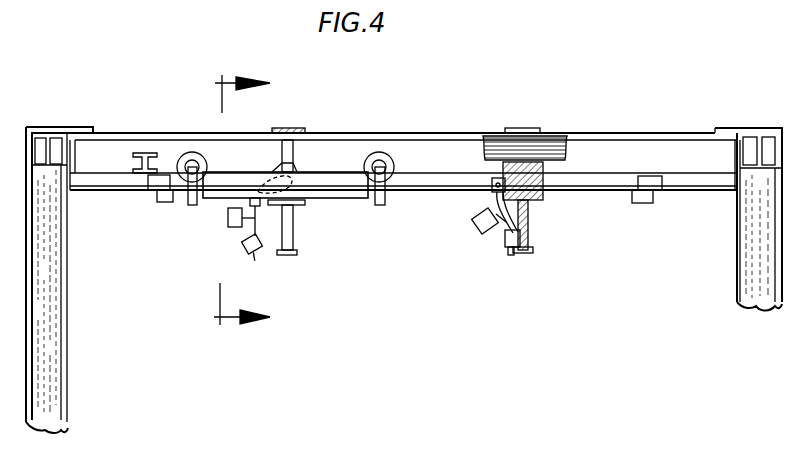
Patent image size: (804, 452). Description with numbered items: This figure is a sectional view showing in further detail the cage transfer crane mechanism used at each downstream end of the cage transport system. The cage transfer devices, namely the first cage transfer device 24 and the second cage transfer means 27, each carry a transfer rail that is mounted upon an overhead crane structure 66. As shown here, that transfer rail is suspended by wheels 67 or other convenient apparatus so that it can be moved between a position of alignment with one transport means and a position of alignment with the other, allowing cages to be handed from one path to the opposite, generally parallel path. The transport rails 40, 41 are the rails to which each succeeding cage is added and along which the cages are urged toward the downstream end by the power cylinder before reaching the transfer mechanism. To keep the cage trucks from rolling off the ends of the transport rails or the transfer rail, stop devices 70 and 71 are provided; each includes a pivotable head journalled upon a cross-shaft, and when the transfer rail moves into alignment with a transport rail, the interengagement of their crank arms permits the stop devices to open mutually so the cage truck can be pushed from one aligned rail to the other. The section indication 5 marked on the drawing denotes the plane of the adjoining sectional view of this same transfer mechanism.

The first cage transfer device 24 is at (134, 114).
The second cage transfer means 27 is at (397, 120).
The wheels 67 is at (186, 153).
The overhead crane structure 66 is at (340, 175).
The stop device 70 is at (228, 228).
The transport rail 40 is at (293, 227).
The transport rail 41 is at (527, 215).
The stop device 71 is at (478, 229).
The section line 5 is at (250, 202).